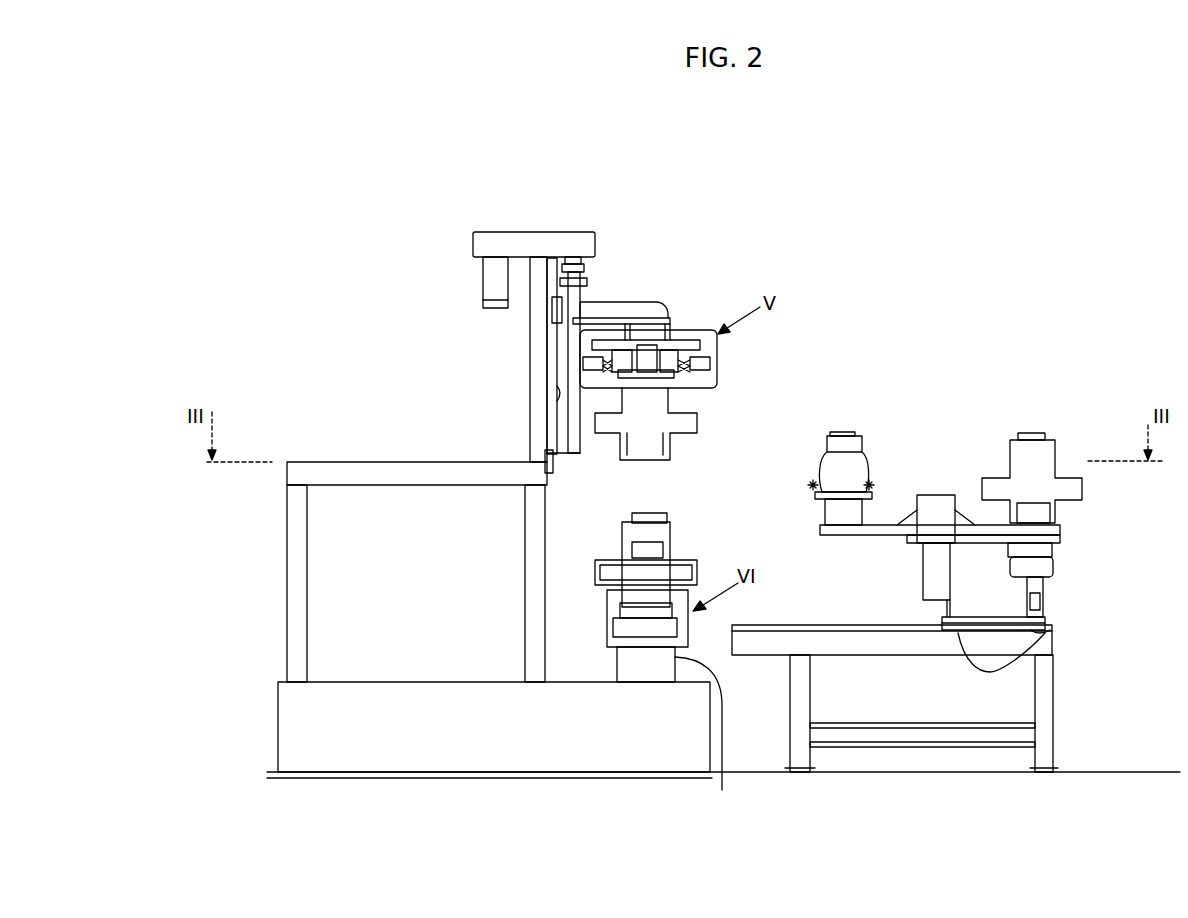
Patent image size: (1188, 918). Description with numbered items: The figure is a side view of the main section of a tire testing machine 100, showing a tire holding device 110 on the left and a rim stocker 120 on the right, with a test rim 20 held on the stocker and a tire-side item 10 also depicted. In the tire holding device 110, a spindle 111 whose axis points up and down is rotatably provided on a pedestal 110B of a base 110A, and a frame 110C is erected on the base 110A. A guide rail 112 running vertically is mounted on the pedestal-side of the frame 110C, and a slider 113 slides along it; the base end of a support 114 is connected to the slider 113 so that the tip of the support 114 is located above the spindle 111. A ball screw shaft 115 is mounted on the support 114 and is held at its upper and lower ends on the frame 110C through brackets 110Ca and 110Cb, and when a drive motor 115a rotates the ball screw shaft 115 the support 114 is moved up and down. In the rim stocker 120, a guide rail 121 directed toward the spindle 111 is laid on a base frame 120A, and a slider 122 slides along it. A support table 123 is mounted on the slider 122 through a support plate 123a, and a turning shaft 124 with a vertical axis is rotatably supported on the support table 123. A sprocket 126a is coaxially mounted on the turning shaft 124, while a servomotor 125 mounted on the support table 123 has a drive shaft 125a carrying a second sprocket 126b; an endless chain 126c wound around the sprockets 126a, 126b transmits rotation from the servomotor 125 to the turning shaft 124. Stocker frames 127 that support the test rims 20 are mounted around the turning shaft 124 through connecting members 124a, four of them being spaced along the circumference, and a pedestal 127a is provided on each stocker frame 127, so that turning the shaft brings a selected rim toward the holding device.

The tire testing machine 100 is at (830, 186).
The tire holding device 110 is at (622, 214).
The base 110A is at (486, 750).
The pedestal 110B is at (708, 745).
The frame 110C is at (530, 430).
The bracket 110Ca is at (549, 232).
The bracket 110Cb is at (551, 474).
The spindle 111 is at (660, 550).
The guide rail 112 is at (556, 391).
The slider 113 is at (547, 300).
The support 114 is at (660, 318).
The ball screw shaft 115 is at (565, 458).
The drive motor 115a is at (483, 279).
The workpiece 10 is at (697, 421).
The test rim 20 is at (860, 432).
The rim stocker 120 is at (983, 387).
The base frame 120A is at (760, 655).
The guide rail 121 is at (745, 627).
The slider 122 is at (990, 674).
The support table 123 is at (942, 622).
The support plate 123a is at (1045, 623).
The turning shaft 124 is at (935, 495).
The connecting member 124a is at (880, 522).
The servomotor 125 is at (1053, 567).
The drive shaft 125a is at (1052, 550).
The sprocket 126a is at (917, 540).
The sprocket 126b is at (1058, 540).
The endless chain 126c is at (930, 570).
The stocker frame 127 is at (820, 530).
The pedestal 127a is at (815, 485).